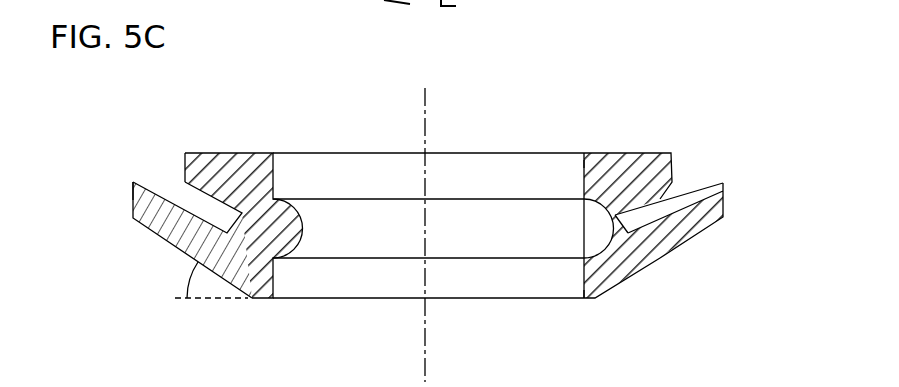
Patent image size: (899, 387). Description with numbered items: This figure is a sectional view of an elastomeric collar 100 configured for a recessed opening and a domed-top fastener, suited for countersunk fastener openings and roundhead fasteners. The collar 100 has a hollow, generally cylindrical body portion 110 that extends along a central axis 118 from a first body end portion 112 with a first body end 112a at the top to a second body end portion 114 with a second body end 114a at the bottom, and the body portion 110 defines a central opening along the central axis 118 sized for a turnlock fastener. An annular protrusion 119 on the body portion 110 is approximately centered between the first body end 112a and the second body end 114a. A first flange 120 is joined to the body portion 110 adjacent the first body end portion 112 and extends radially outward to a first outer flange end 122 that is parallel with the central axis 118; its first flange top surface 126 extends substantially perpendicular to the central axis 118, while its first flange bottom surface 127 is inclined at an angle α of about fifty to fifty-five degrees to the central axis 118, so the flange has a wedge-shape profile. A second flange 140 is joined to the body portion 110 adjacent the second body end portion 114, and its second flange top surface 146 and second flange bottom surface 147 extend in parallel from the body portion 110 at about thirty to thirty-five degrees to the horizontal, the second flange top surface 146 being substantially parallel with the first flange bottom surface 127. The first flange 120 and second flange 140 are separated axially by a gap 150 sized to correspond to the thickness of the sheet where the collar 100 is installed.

The collar 100 is at (762, 103).
The body portion 110 is at (605, 242).
The first body end portion 112 is at (577, 168).
The first body end 112a is at (597, 153).
The second body end portion 114 is at (565, 288).
The second body end 114a is at (588, 299).
The central axis 118 is at (425, 113).
The annular protrusion 119 is at (555, 236).
The first flange 120 is at (652, 168).
The first outer flange end 122 is at (185, 166).
The first flange top surface 126 is at (193, 153).
The first flange bottom surface 127 is at (184, 191).
The second flange 140 is at (702, 213).
The second flange top surface 146 is at (133, 182).
The second flange bottom surface 147 is at (153, 235).
The gap 150 is at (663, 193).